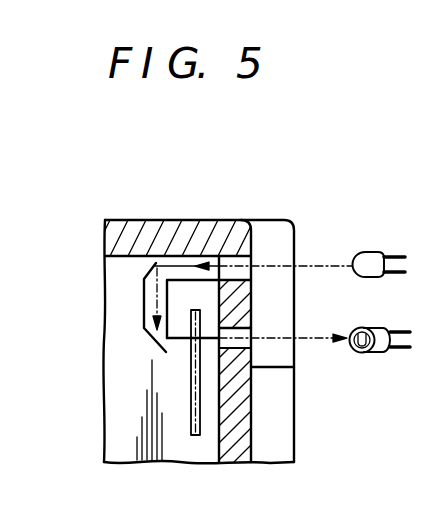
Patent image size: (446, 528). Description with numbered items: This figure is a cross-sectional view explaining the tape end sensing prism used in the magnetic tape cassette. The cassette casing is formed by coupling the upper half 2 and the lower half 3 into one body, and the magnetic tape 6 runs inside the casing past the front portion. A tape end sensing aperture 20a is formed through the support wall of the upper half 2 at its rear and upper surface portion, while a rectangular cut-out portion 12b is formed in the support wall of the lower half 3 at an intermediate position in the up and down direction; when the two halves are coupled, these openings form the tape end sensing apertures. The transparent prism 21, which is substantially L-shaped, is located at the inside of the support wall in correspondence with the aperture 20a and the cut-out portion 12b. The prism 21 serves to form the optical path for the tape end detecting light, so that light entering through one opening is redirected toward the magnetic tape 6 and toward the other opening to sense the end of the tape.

The upper half 2 is at (190, 219).
The lower half 3 is at (275, 463).
The magnetic tape 6 is at (182, 433).
The transparent prism 21 is at (143, 298).
The tape end sensing aperture 20a is at (252, 262).
The cut-out portion 12b is at (252, 344).